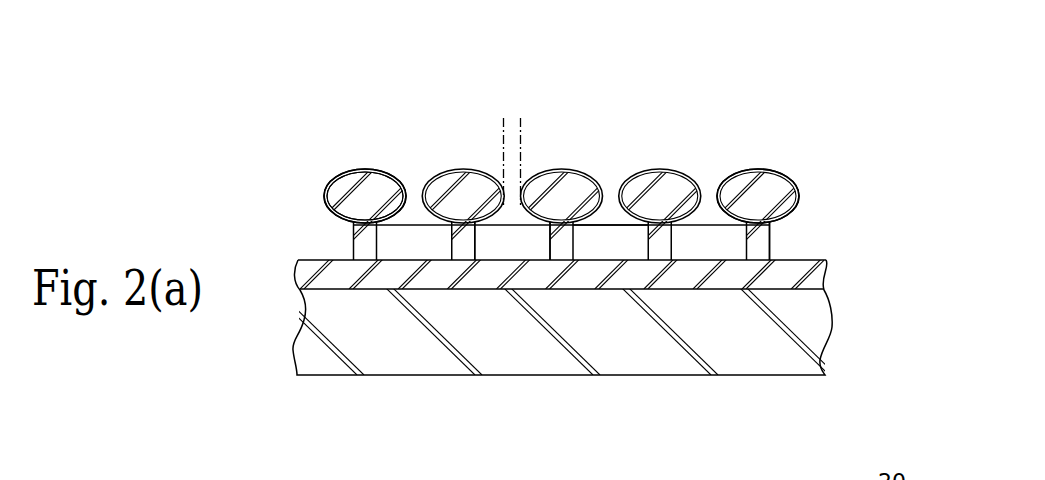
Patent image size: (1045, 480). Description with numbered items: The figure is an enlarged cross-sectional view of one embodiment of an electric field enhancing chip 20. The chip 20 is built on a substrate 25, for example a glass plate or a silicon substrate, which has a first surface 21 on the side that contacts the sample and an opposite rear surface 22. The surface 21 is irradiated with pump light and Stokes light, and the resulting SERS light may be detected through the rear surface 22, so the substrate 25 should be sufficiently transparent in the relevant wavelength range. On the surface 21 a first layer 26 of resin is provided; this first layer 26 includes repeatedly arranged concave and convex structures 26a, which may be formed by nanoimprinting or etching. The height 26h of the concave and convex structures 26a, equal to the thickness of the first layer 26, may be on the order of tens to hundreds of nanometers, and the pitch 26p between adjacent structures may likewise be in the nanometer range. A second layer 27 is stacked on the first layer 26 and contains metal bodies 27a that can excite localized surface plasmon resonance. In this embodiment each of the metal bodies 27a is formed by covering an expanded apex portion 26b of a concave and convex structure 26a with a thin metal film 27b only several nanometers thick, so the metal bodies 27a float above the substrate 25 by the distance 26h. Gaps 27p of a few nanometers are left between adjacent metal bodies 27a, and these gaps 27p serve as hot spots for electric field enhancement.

The electric field enhancing chip 20 is at (727, 92).
The first surface 21 is at (303, 227).
The rear surface 22 is at (313, 392).
The substrate 25 is at (821, 351).
The first layer 26 is at (905, 192).
The concave and convex structures 26a is at (787, 248).
The expanded apex portions 26b is at (378, 192).
The pitch 26p is at (476, 243).
The height 26h is at (597, 224).
The second layer 27 is at (905, 152).
The metal bodies 27a is at (772, 164).
The thin metal film 27b is at (367, 168).
The gaps 27p is at (478, 127).